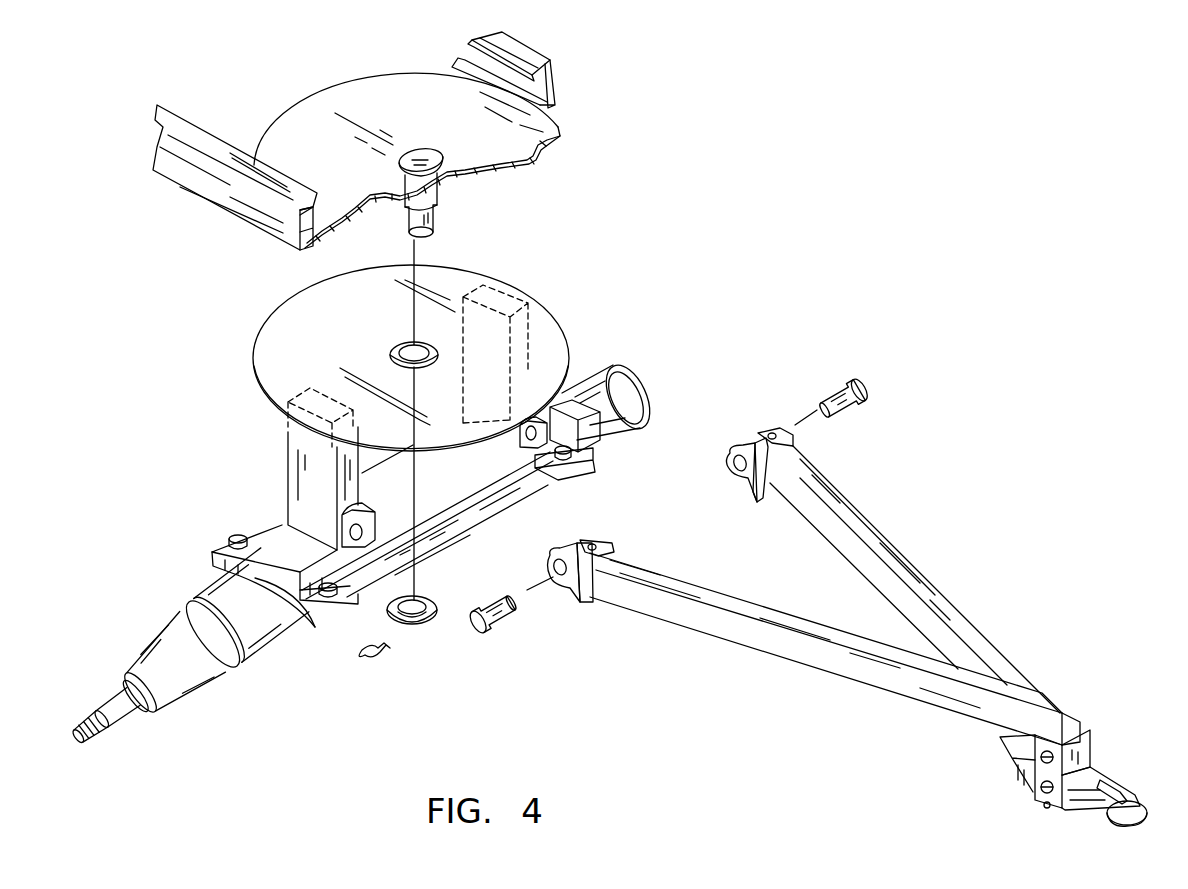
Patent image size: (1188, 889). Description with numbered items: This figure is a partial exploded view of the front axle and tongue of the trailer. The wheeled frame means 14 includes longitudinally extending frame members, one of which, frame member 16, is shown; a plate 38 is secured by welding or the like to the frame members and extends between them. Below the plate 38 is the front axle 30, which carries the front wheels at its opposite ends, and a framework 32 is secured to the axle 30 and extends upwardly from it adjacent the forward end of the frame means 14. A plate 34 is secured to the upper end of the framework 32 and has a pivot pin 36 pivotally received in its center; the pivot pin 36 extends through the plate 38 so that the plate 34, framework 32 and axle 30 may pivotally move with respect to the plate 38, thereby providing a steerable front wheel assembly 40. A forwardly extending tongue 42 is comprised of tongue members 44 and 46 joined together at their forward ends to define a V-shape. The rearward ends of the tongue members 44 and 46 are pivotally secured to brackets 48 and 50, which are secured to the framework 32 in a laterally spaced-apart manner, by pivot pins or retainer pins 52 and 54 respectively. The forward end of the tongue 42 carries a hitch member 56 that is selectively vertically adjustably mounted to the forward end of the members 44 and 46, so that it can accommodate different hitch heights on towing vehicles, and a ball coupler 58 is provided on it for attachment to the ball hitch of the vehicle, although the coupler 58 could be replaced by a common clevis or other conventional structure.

The wheeled frame means 14 is at (520, 48).
The frame member 16 is at (233, 195).
The front axle 30 is at (260, 617).
The framework 32 is at (278, 463).
The plate 34 is at (556, 322).
The pivot pin 36 is at (438, 201).
The plate 38 is at (563, 130).
The steerable front wheel assembly 40 is at (570, 461).
The tongue 42 is at (855, 627).
The tongue member 44 is at (943, 603).
The tongue member 46 is at (823, 662).
The bracket 48 is at (607, 438).
The bracket 50 is at (427, 522).
The pivot pin or retainer pin 52 is at (847, 386).
The pivot pin or retainer pin 54 is at (497, 613).
The hitch member 56 is at (1093, 748).
The ball coupler 58 is at (1135, 798).